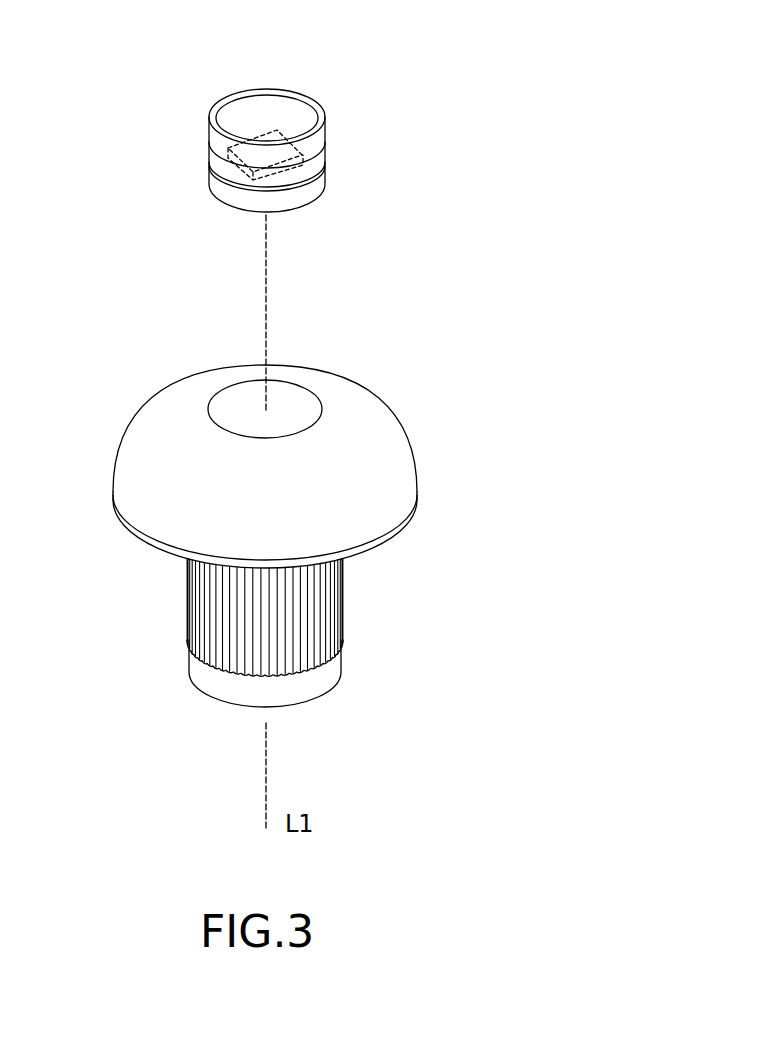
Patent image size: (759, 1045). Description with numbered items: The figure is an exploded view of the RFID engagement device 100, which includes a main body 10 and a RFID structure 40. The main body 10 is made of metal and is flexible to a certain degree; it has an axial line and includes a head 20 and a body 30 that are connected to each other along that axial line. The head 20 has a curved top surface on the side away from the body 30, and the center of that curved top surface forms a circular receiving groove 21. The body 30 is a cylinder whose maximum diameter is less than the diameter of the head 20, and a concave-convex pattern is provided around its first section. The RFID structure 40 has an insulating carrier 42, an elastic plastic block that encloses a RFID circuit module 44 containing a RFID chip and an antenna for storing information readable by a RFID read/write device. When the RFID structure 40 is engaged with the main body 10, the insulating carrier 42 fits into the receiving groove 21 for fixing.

The RFID engagement device 100 is at (643, 150).
The main body 10 is at (375, 494).
The head 20 is at (351, 443).
The receiving groove 21 is at (246, 396).
The body 30 is at (326, 692).
The RFID structure 40 is at (353, 120).
The insulating carrier 42 is at (216, 101).
The RFID circuit module 44 is at (225, 148).